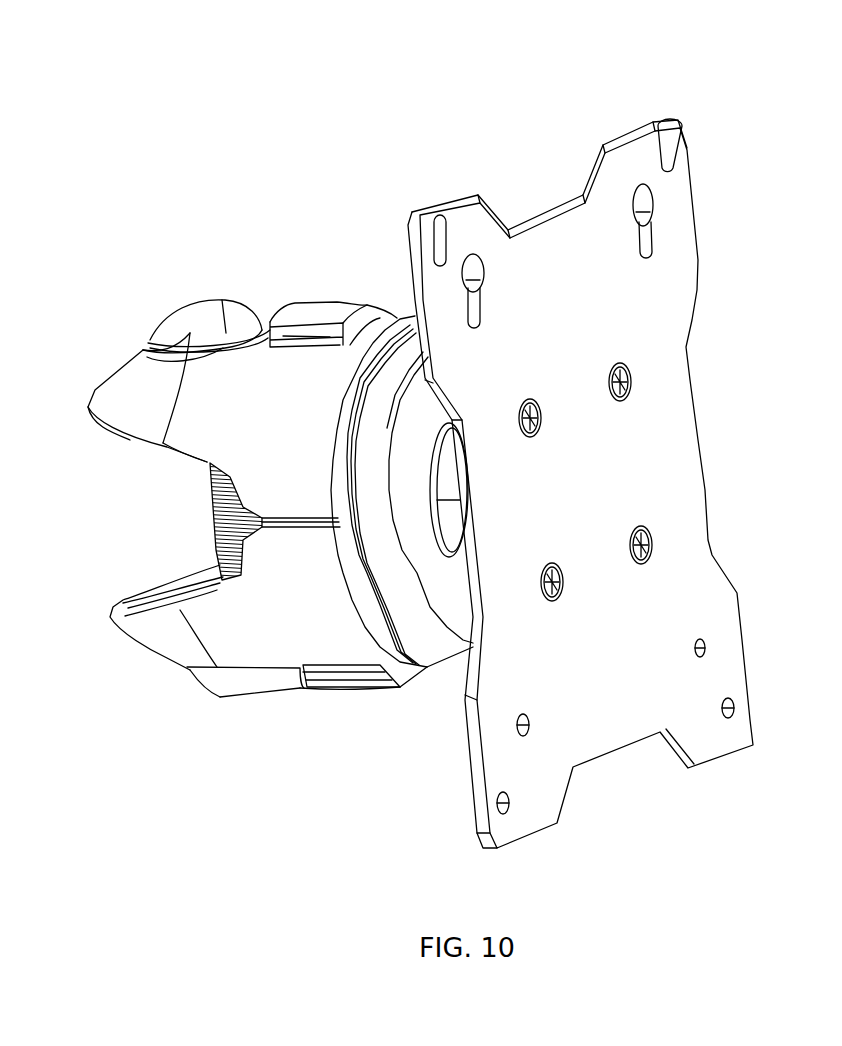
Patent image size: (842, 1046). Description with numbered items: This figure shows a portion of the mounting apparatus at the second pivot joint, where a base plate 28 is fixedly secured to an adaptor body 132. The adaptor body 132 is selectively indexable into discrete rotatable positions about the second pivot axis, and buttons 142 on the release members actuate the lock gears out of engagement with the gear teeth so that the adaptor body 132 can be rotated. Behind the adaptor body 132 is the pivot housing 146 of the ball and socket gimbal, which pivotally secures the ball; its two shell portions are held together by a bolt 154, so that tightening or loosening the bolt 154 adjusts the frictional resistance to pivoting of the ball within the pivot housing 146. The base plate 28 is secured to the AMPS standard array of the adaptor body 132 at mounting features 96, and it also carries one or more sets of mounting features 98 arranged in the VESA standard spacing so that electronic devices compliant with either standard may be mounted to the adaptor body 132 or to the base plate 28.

The base plate 28 is at (702, 237).
The mounting features 96 is at (628, 384).
The mounting features 98 is at (673, 147).
The adaptor body 132 is at (390, 650).
The buttons 142 is at (333, 305).
The pivot housing 146 is at (172, 657).
The bolt 154 is at (190, 328).